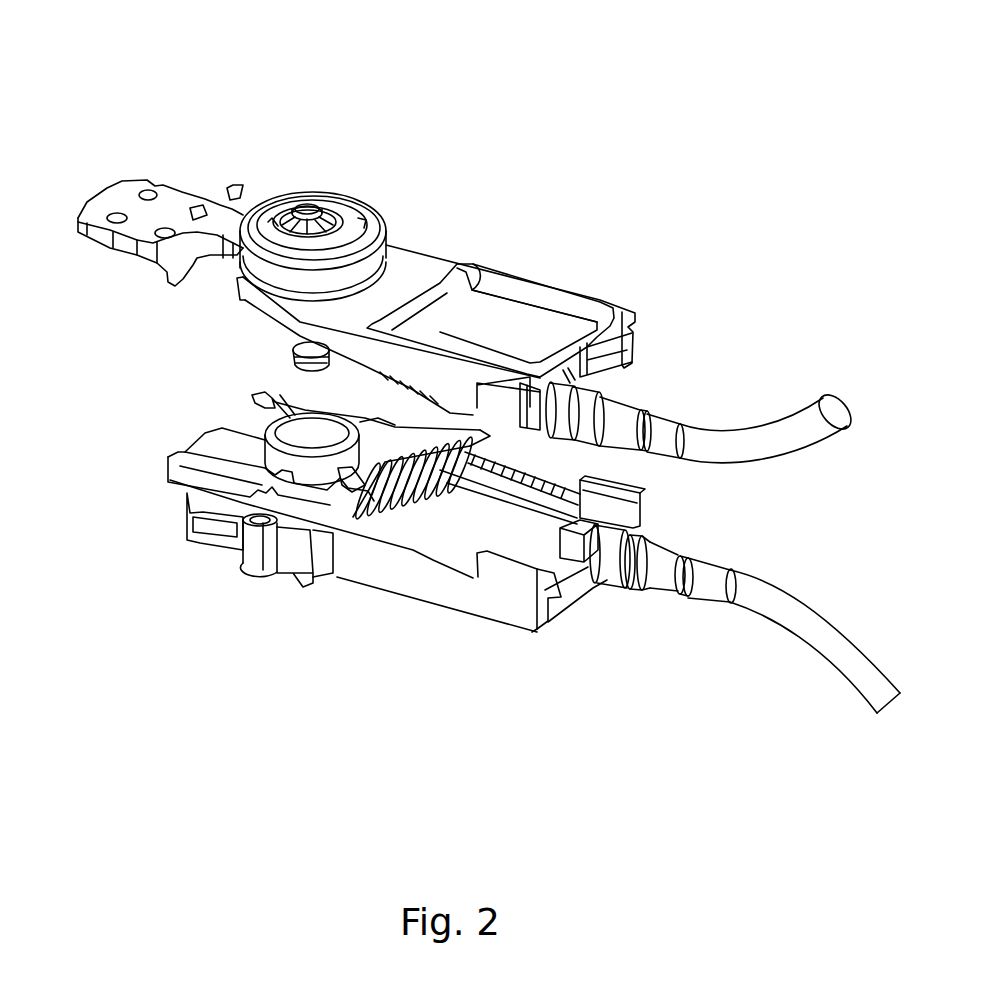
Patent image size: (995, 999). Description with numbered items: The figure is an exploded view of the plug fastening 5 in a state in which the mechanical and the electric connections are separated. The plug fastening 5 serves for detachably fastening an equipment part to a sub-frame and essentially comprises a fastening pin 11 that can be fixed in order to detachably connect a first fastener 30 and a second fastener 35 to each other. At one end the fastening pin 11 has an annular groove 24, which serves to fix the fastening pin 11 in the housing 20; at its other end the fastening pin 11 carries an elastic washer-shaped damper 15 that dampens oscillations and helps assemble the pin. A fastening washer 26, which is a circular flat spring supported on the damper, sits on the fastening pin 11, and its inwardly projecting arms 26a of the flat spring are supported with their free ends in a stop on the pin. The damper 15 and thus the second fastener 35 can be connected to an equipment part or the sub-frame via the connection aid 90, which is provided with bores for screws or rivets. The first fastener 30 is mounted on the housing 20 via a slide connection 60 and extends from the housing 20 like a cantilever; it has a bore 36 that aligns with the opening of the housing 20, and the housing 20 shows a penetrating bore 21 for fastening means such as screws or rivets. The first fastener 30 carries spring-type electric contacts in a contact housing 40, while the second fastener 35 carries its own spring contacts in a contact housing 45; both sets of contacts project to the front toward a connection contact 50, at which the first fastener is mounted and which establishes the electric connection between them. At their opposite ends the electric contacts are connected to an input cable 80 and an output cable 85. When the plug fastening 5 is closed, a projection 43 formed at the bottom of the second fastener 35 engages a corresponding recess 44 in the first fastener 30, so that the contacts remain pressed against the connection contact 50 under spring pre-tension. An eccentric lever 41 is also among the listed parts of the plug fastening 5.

The plug fastening 5 is at (606, 130).
The fastening pin 11 is at (307, 210).
The damper 15 is at (367, 223).
The housing 20 is at (253, 557).
The penetrating bore 21 is at (267, 567).
The groove 24 is at (295, 343).
The fastening washer 26 is at (273, 215).
The arms of flat spring 26a is at (327, 213).
The first fastener 30 is at (368, 562).
The second fastener 35 is at (398, 278).
The bore 36 is at (235, 436).
The contact housing 40 is at (553, 567).
The eccentric lever 41 is at (535, 452).
The projection 43 is at (455, 395).
The recess 44 is at (463, 580).
The contact housing 45 is at (373, 380).
The connection contact 50 is at (410, 568).
The slide connection 60 is at (177, 497).
The input cable 80 is at (793, 443).
The output cable 85 is at (800, 627).
The connection aid 90 is at (120, 215).